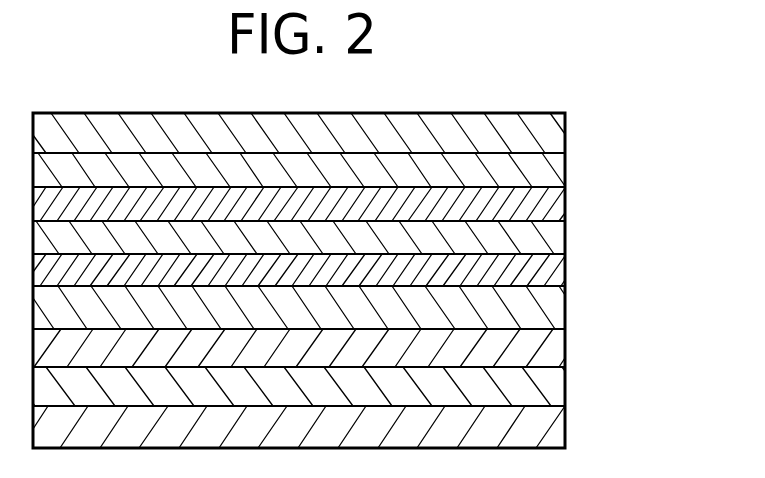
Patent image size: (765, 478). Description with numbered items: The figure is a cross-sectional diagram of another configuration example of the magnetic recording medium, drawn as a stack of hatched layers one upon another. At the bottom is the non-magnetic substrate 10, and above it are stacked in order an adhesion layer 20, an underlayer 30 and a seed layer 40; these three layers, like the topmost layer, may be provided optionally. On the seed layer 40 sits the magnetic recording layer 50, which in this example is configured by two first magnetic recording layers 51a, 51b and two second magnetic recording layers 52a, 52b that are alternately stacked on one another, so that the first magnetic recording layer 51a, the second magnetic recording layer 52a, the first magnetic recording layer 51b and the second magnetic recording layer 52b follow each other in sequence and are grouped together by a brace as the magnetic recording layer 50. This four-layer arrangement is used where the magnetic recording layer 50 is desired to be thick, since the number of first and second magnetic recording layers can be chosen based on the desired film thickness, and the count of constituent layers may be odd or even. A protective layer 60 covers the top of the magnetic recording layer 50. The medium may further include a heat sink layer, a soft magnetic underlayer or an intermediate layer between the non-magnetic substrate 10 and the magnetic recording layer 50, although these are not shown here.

The non-magnetic substrate 10 is at (570, 432).
The adhesion layer 20 is at (570, 390).
The underlayer 30 is at (570, 350).
The seed layer 40 is at (570, 313).
The magnetic recording layer 50 is at (384, 218).
The first magnetic recording layer 51a is at (353, 271).
The first magnetic recording layer 51b is at (568, 207).
The second magnetic recording layer 52a is at (568, 241).
The second magnetic recording layer 52b is at (568, 169).
The protective layer 60 is at (568, 131).